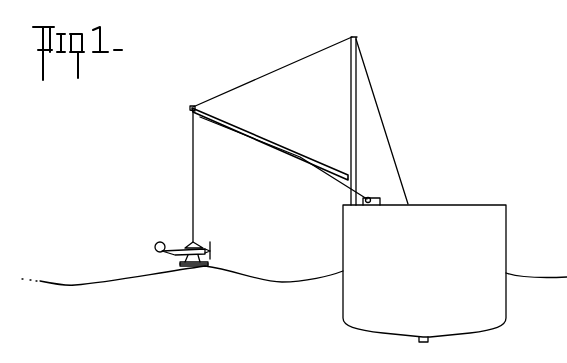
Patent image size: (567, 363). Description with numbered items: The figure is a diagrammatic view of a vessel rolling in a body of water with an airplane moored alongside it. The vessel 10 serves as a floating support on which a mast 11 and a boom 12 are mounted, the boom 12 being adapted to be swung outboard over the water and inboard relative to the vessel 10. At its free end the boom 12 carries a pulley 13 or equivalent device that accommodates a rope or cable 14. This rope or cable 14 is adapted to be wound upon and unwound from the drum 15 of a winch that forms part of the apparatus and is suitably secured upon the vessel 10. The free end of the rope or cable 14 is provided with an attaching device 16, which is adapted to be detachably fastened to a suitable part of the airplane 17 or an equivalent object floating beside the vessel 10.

The vessel 10 is at (424, 273).
The mast 11 is at (357, 135).
The boom 12 is at (280, 147).
The pulley 13 is at (191, 109).
The rope or cable 14 is at (192, 188).
The drum 15 is at (368, 204).
The attaching device 16 is at (196, 240).
The airplane 17 is at (177, 255).